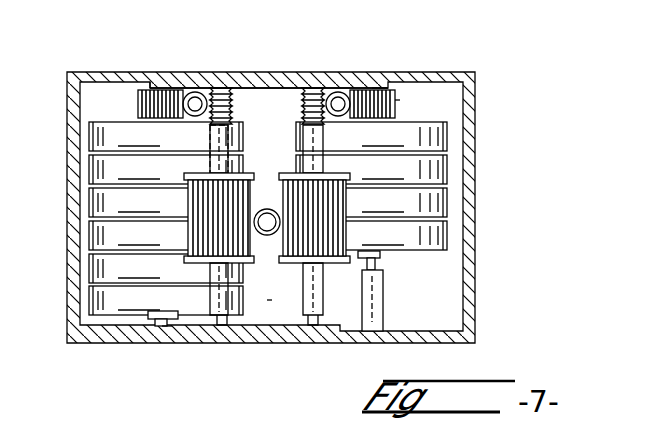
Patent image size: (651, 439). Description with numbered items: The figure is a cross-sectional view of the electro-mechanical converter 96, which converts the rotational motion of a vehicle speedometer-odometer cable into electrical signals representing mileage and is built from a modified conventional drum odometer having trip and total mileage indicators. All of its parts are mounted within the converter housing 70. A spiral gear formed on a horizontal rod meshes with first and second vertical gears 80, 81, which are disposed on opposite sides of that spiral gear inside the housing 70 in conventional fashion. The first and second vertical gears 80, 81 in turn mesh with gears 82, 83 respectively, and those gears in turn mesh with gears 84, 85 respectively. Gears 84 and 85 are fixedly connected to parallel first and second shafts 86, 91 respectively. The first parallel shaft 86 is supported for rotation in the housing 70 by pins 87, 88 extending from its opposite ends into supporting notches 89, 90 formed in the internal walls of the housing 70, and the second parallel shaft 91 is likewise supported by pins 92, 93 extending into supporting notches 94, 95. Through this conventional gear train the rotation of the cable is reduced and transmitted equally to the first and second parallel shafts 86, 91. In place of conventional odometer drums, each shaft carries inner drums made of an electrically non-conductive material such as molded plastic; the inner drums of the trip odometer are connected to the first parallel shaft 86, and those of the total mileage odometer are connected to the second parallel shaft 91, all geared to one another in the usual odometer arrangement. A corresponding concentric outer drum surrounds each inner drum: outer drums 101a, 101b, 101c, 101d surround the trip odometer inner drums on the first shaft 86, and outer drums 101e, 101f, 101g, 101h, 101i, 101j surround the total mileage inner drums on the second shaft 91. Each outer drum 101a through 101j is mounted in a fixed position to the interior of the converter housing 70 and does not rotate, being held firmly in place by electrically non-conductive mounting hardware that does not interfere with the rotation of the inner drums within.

The converter housing 70 is at (146, 64).
The pin 92 is at (150, 86).
The supporting notch 94 is at (170, 78).
The gear 85 is at (138, 106).
The gear 83 is at (232, 103).
The gear 82 is at (330, 93).
The supporting notch 89 is at (378, 88).
The pin 87 is at (376, 92).
The gear 84 is at (396, 106).
The outer drum 101a is at (371, 136).
The outer drum 101b is at (371, 169).
The outer drum 101c is at (371, 202).
The outer drum 101d is at (371, 235).
The outer drum 101e is at (166, 136).
The outer drum 101f is at (166, 169).
The outer drum 101g is at (166, 202).
The outer drum 101h is at (166, 235).
The outer drum 101i is at (166, 268).
The outer drum 101j is at (166, 300).
The second vertical gear 81 is at (252, 250).
The first vertical gear 80 is at (333, 250).
The first parallel shaft 86 is at (383, 254).
The pin 88 is at (378, 265).
The supporting notch 90 is at (378, 282).
The second parallel shaft 91 is at (148, 313).
The pin 93 is at (160, 323).
The supporting notch 95 is at (166, 326).
The electro-mechanical converter 96 is at (275, 306).